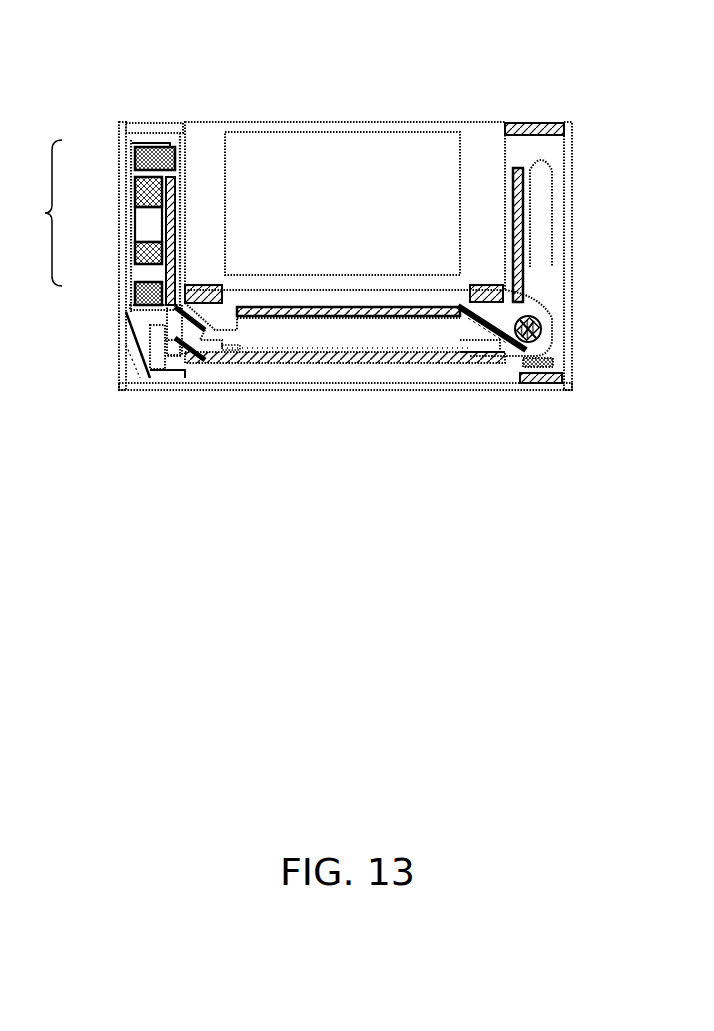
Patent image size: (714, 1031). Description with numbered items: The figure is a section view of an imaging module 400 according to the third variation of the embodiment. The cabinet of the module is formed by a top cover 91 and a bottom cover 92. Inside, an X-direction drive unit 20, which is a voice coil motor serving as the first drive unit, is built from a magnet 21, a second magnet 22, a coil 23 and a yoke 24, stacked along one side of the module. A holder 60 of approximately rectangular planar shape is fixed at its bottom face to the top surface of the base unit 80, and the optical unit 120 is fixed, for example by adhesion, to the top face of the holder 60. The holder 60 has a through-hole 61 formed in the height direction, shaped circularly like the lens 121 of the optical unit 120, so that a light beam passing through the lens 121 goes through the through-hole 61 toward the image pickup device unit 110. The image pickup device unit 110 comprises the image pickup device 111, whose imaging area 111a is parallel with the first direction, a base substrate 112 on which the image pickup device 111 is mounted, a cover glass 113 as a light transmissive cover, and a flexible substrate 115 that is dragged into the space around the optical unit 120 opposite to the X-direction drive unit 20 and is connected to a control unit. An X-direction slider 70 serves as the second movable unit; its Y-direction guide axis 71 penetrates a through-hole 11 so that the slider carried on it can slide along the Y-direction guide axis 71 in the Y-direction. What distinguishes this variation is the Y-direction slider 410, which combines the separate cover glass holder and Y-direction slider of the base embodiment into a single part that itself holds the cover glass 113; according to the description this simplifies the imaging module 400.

The imaging module 400 is at (98, 83).
The image pickup device unit 110 is at (288, 362).
The optical unit 120 is at (466, 120).
The lens 121 is at (405, 135).
The top cover 91 is at (170, 120).
The bottom cover 92 is at (119, 130).
The X-direction drive unit 20 is at (97, 225).
The magnet 21 is at (135, 156).
The yoke 24 is at (135, 198).
The coil 23 is at (135, 207).
The magnet 22 is at (135, 290).
The X-direction slider 70 is at (150, 340).
The base unit 80 is at (130, 370).
The holder 60 is at (540, 291).
The through-hole 11 is at (545, 330).
The Y-direction guide axis 71 is at (535, 338).
The cover glass 113 is at (410, 316).
The image pickup device 111 is at (347, 365).
The imaging area 111a is at (385, 350).
The base substrate 112 is at (233, 352).
The through-hole 61 is at (460, 352).
The Y-direction slider 410 is at (523, 248).
The flexible substrate 115 is at (552, 210).